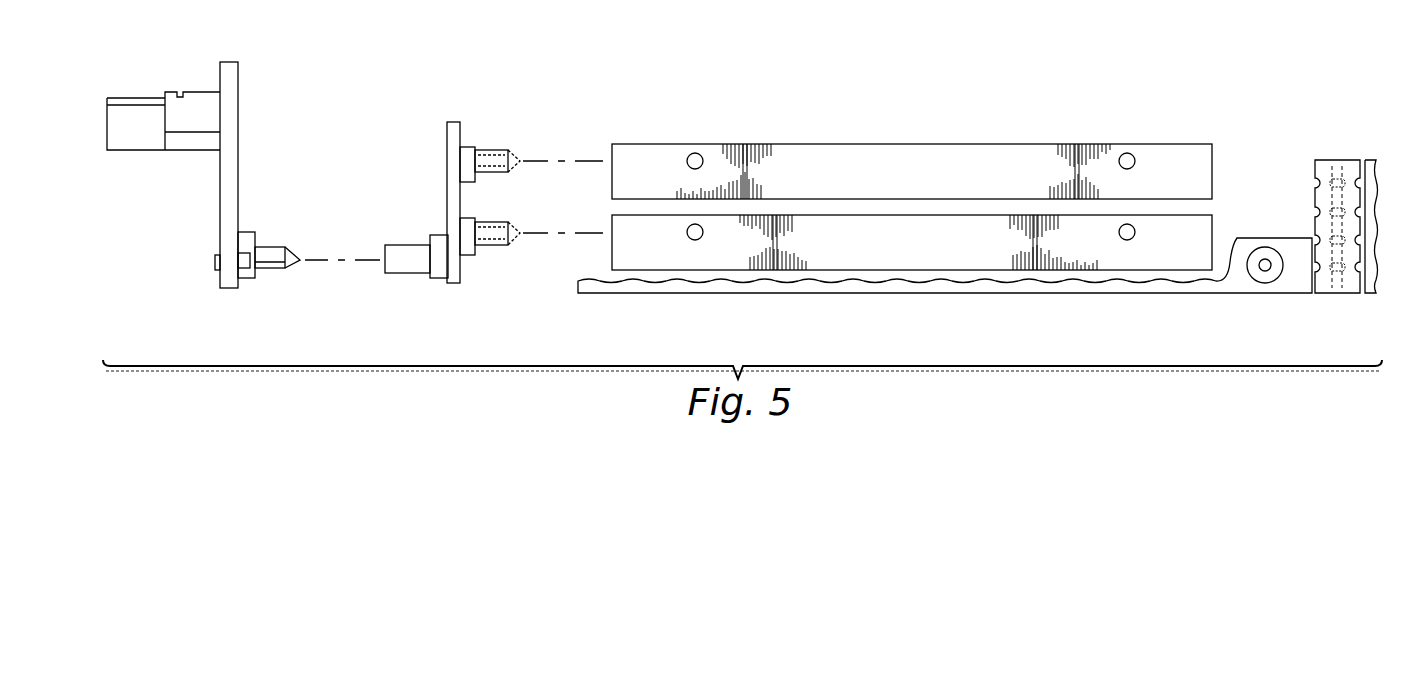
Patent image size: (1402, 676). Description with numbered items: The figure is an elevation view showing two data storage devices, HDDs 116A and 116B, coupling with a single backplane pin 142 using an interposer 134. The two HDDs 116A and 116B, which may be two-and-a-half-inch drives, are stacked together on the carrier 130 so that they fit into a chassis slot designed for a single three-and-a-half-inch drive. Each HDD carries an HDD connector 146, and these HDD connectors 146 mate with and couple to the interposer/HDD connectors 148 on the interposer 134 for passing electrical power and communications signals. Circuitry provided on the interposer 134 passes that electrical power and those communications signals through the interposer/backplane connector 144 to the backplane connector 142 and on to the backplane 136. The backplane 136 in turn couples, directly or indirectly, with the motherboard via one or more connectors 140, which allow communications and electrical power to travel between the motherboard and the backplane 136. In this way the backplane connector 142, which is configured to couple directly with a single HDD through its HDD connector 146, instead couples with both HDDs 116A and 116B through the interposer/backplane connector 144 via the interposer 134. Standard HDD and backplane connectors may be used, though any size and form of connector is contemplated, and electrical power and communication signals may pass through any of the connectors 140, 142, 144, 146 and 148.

The carrier 130 is at (1001, 296).
The interposer 134 is at (445, 201).
The backplane 136 is at (242, 163).
The connectors 140 is at (198, 92).
The backplane connector 142 is at (271, 274).
The interposer/backplane connector 144 is at (408, 276).
The HDD connectors 146 is at (868, 183).
The interposer/HDD connectors 148 is at (488, 147).
The HDD 116A is at (942, 184).
The HDD 116B is at (942, 256).